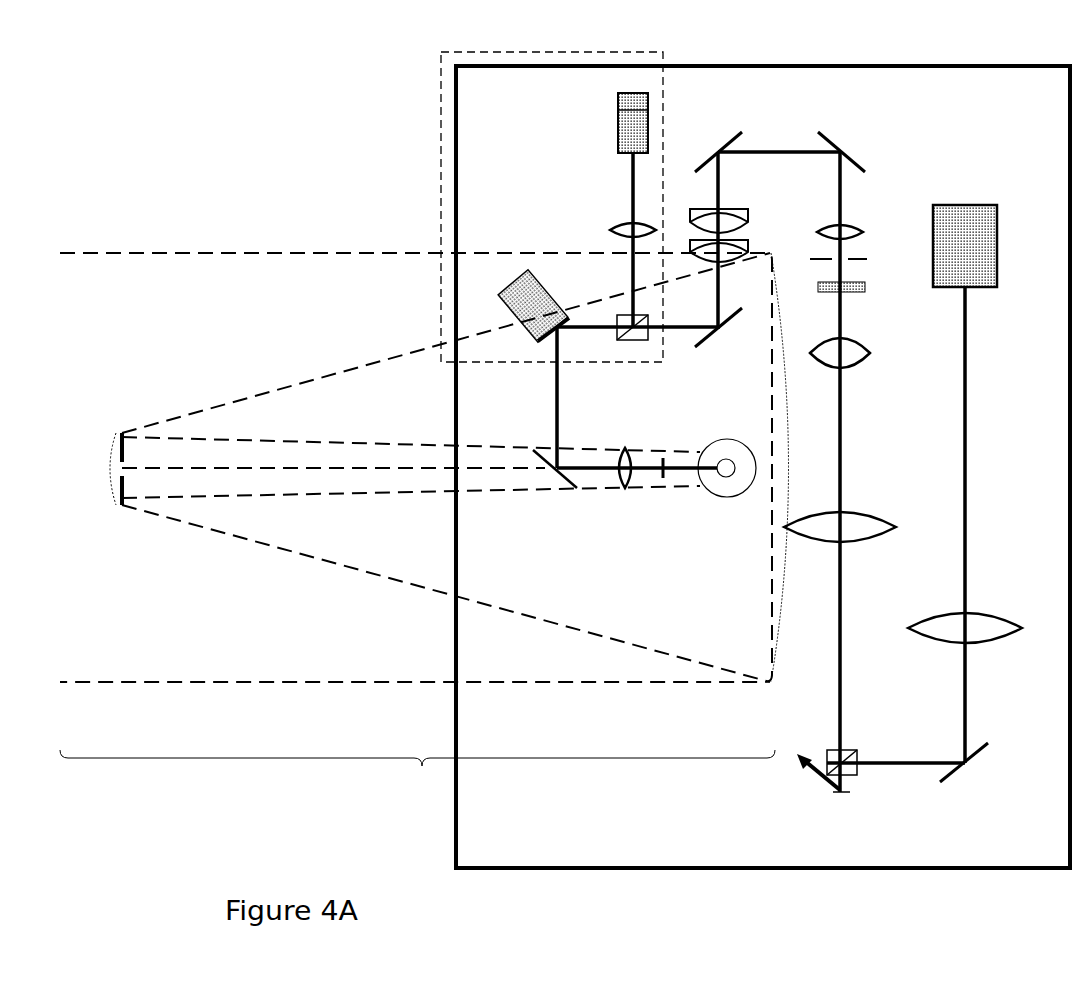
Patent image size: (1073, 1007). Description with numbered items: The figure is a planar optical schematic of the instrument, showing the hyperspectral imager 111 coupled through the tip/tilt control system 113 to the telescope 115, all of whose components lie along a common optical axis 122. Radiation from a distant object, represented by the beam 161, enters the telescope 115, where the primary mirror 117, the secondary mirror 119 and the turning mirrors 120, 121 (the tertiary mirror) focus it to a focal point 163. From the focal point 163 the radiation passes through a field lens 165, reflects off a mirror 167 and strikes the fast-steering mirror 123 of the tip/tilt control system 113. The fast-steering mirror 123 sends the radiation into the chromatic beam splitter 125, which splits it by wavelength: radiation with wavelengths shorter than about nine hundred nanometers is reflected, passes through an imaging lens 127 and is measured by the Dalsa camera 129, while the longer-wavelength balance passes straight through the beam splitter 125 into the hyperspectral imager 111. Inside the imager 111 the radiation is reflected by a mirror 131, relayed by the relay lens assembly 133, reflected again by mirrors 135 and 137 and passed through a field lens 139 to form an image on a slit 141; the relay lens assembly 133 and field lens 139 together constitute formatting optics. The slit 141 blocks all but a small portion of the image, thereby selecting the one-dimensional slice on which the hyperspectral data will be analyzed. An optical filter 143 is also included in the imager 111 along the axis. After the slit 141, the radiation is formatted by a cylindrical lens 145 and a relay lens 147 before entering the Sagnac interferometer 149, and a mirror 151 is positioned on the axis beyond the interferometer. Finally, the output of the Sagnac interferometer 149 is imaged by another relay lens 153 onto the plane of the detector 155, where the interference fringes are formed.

The hyperspectral imager 111 is at (578, 830).
The tip/tilt control system 113 is at (440, 118).
The telescope 115 is at (417, 773).
The primary mirror 117 is at (772, 608).
The secondary mirror 119 is at (113, 487).
The turning mirror 120 is at (696, 496).
The turning mirror 121 is at (708, 492).
The optical axis 122 is at (580, 332).
The fast-steering mirror 123 is at (505, 275).
The chromatic beam splitter 125 is at (650, 340).
The imaging lens 127 is at (612, 238).
The Dalsa camera 129 is at (617, 150).
The mirror 131 is at (708, 340).
The relay lens assembly 133 is at (750, 235).
The mirror 135 is at (720, 145).
The mirror 137 is at (853, 162).
The field lens 139 is at (858, 232).
The slit 141 is at (870, 262).
The optical filter 143 is at (865, 291).
The cylindrical lens 145 is at (870, 365).
The relay lens 147 is at (875, 540).
The Sagnac interferometer 149 is at (815, 786).
The mirror 151 is at (960, 778).
The relay lens 153 is at (945, 640).
The detector 155 is at (990, 287).
The beam 161 is at (390, 254).
The focal point 163 is at (660, 458).
The field lens 165 is at (622, 480).
The mirror 167 is at (560, 484).